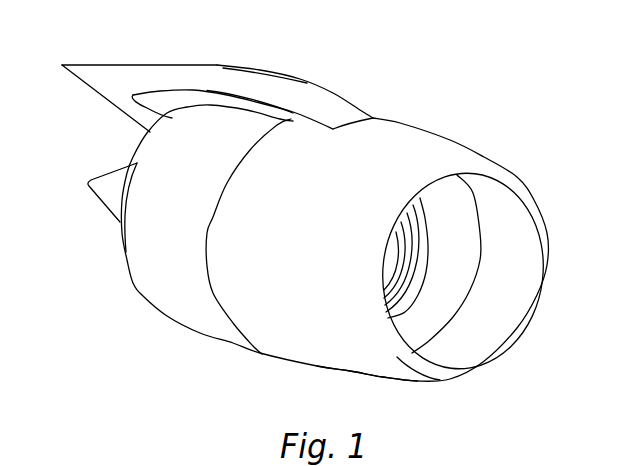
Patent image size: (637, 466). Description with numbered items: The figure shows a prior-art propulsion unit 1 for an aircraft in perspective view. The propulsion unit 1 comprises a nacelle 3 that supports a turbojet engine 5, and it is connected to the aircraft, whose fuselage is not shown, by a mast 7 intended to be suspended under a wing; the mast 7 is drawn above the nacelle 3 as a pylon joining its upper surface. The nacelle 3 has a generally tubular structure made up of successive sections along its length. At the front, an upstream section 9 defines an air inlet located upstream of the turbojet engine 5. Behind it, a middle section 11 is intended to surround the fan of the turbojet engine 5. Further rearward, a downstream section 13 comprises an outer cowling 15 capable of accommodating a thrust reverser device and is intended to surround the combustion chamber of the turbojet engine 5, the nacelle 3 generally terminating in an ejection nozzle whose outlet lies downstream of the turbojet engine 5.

The propulsion unit 1 is at (488, 104).
The nacelle 3 is at (392, 111).
The turbojet engine 5 is at (108, 190).
The mast 7 is at (110, 63).
The upstream section 9 is at (480, 172).
The middle section 11 is at (278, 318).
The downstream section 13 is at (205, 307).
The outer cowling 15 is at (157, 268).